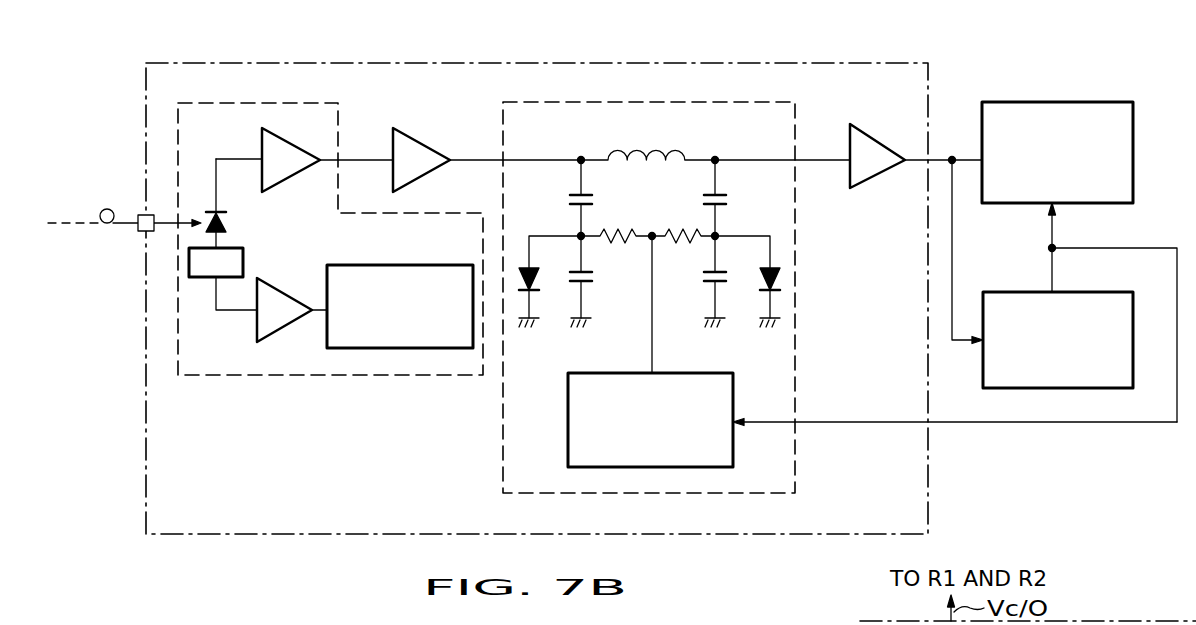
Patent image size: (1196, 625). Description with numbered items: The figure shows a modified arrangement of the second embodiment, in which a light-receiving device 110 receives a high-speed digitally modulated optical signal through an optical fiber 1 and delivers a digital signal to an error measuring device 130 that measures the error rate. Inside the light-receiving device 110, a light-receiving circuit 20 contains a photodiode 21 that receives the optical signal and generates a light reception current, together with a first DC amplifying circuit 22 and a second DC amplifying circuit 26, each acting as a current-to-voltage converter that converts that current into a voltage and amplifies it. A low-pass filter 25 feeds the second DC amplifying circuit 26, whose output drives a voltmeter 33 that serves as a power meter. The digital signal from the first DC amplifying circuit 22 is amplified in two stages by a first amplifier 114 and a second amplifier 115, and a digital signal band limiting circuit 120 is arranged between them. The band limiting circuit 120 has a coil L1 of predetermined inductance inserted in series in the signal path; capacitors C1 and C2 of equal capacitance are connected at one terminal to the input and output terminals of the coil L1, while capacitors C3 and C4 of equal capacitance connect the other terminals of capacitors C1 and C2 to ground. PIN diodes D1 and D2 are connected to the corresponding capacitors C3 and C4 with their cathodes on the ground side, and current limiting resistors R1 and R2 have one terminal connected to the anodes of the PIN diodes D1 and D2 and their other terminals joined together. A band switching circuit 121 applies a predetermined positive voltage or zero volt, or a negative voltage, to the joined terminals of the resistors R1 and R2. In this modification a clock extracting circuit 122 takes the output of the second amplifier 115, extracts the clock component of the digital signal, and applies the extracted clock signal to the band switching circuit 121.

The optical fiber 1 is at (107, 209).
The light-receiving circuit 20 is at (341, 138).
The photodiode 21 is at (228, 223).
The first DC amplifying circuit 22 is at (304, 168).
The low-pass filter 25 is at (198, 278).
The second DC amplifying circuit 26 is at (288, 279).
The voltmeter 33 is at (441, 266).
The light-receiving device 110 is at (645, 62).
The first amplifier 114 is at (440, 152).
The second amplifier 115 is at (884, 140).
The digital signal band limiting circuit 120 is at (502, 224).
The band switching circuit 121 is at (735, 397).
The clock extracting circuit 122 is at (983, 372).
The error measuring device 130 is at (1086, 100).
The coil L1 is at (654, 150).
The capacitor C1 is at (569, 199).
The capacitor C2 is at (737, 198).
The capacitor C3 is at (594, 277).
The capacitor C4 is at (705, 277).
The current limiting resistor R1 is at (616, 219).
The current limiting resistor R2 is at (683, 219).
The PIN diode D1 is at (533, 270).
The PIN diode D2 is at (768, 277).